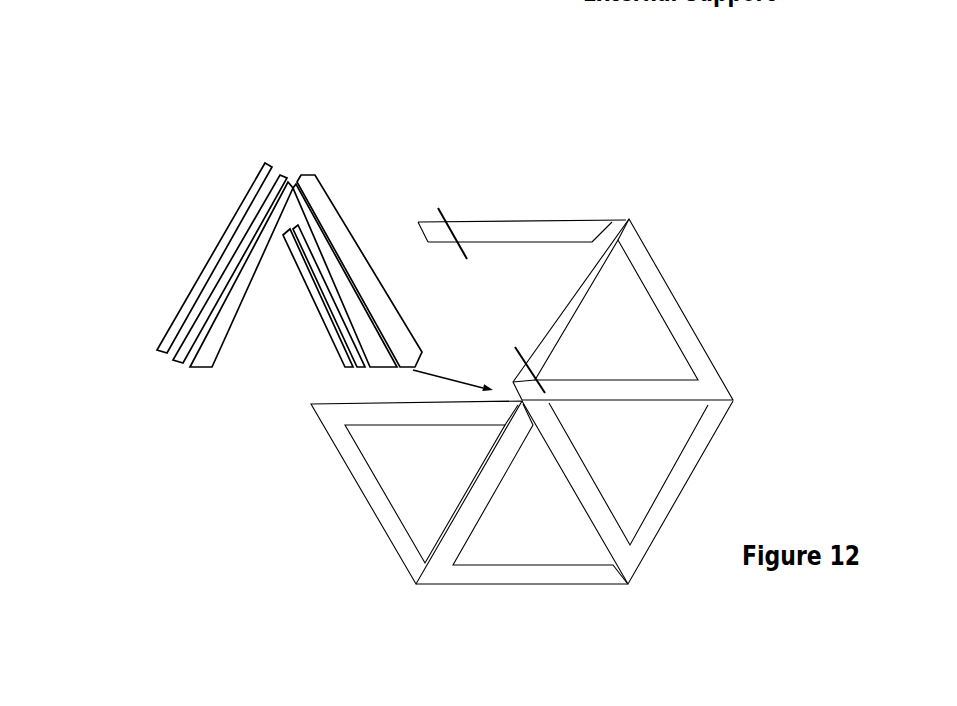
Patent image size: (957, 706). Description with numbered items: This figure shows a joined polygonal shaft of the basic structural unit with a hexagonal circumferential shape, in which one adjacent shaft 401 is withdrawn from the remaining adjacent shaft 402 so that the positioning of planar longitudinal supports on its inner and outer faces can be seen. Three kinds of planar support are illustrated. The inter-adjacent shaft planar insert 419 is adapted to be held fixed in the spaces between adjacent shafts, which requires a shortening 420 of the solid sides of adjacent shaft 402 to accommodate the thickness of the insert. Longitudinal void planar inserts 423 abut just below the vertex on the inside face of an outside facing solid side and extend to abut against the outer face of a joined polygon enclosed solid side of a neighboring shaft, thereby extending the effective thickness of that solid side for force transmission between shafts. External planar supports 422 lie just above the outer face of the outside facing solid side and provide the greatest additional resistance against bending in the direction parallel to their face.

The adjacent shaft 401 is at (232, 223).
The adjacent shaft 402 is at (613, 217).
The inter-adjacent shaft planar insert 419 is at (340, 192).
The shortening 420 is at (520, 338).
The external planar supports 422 is at (284, 155).
The longitudinal void planar inserts 423 is at (354, 375).